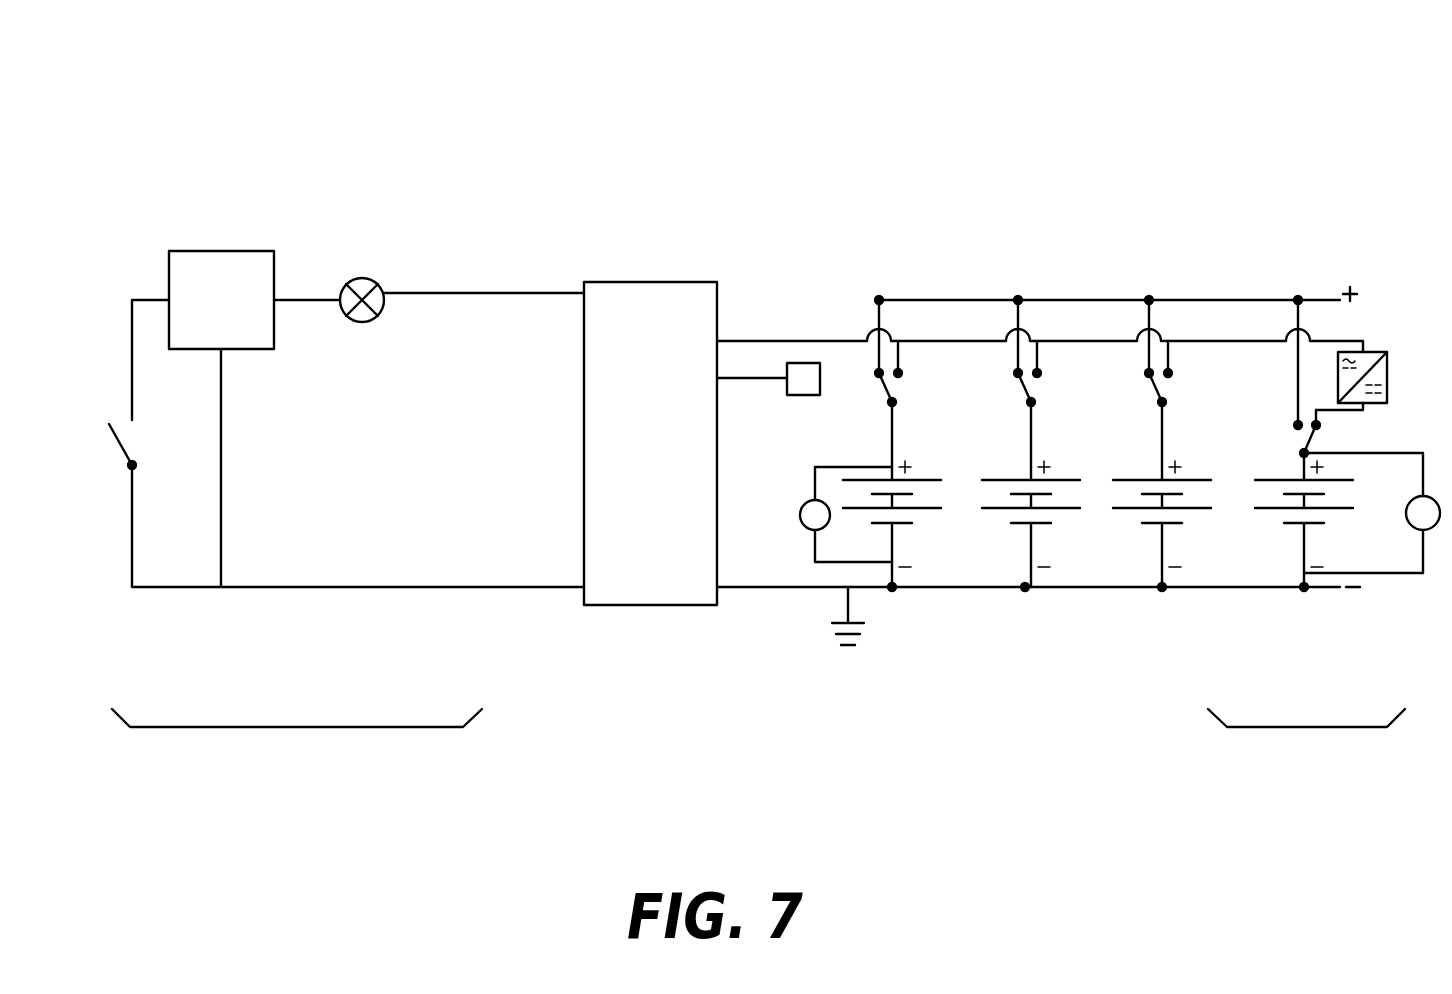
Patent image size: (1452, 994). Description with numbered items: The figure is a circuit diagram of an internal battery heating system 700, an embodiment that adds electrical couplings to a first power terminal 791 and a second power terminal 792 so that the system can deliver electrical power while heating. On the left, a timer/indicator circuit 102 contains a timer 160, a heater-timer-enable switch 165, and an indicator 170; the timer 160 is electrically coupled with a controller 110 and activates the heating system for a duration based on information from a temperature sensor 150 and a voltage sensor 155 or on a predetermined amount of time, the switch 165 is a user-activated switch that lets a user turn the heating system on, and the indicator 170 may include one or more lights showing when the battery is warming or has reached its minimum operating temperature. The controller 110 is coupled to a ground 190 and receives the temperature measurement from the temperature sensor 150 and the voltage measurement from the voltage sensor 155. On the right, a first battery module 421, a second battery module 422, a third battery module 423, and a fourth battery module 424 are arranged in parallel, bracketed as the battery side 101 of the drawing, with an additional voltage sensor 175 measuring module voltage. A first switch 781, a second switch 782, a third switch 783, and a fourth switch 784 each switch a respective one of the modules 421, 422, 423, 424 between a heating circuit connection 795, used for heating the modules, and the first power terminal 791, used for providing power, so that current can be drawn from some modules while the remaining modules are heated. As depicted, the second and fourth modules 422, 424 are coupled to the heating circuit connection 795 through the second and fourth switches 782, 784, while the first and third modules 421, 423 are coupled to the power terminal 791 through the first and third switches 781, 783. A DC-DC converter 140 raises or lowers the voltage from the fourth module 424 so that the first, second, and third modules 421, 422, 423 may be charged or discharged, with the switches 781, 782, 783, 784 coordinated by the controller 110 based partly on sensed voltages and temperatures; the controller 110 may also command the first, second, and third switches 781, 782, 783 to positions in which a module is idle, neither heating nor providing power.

The internal battery heating system 700 is at (284, 116).
The timer 160 is at (221, 300).
The indicator 170 is at (362, 278).
The heater-timer-enable switch 165 is at (123, 486).
The controller 110 is at (650, 443).
The temperature sensor 150 is at (803, 397).
The voltage sensor 155 is at (800, 512).
The voltage sensor 175 is at (1437, 495).
The DC-DC converter 140 is at (1372, 350).
The ground 190 is at (818, 640).
The first battery module 421 is at (947, 500).
The second battery module 422 is at (1083, 500).
The third battery module 423 is at (1220, 500).
The fourth battery module 424 is at (1359, 500).
The first switch 781 is at (915, 398).
The second switch 782 is at (1010, 388).
The third switch 783 is at (1180, 393).
The fourth switch 784 is at (1288, 445).
The first power terminal 791 is at (1368, 282).
The second power terminal 792 is at (1367, 596).
The heating circuit connection 795 is at (1073, 344).
The battery pack 101 is at (1305, 727).
The timer/indicator circuit 102 is at (277, 727).